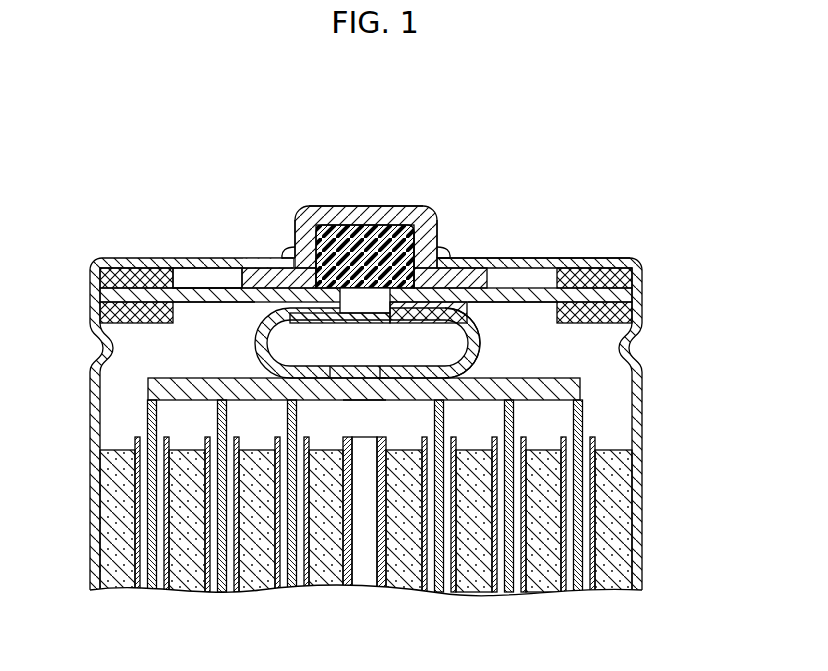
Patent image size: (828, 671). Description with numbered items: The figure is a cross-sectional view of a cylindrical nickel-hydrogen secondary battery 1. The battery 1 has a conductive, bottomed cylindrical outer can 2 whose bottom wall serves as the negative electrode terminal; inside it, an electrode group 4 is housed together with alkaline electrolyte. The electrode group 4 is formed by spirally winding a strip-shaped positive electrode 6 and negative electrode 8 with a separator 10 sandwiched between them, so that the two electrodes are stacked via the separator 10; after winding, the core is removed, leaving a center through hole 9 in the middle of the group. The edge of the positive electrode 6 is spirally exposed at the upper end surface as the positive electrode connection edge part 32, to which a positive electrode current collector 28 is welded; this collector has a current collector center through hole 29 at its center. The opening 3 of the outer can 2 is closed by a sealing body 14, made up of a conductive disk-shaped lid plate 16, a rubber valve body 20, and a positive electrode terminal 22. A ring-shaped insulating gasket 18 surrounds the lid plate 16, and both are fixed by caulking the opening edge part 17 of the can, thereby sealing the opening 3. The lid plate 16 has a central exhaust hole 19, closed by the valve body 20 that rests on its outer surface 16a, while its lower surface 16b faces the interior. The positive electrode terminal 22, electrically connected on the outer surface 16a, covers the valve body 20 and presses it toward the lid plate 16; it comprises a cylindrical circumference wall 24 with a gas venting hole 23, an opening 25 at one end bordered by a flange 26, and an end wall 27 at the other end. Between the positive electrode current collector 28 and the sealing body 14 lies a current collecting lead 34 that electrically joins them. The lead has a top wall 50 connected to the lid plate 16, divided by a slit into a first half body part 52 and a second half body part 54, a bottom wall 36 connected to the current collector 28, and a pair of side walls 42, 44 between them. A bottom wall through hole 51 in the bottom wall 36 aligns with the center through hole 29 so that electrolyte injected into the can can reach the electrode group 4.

The battery 1 is at (552, 166).
The outer can 2 is at (93, 493).
The opening 3 is at (558, 258).
The electrode group 4 is at (372, 524).
The positive electrode 6 is at (215, 567).
The negative electrode 8 is at (180, 514).
The center through hole 9 is at (366, 592).
The separator 10 is at (190, 543).
The sealing body 14 is at (199, 278).
The lid plate 16 is at (226, 290).
The outer surface 16a is at (185, 288).
The lower surface of sealing plate 16b is at (188, 303).
The opening edge part 17 is at (645, 280).
The insulating gasket 18 is at (128, 268).
The exhaust hole 19 is at (335, 290).
The valve body 20 is at (372, 280).
The positive electrode terminal 22 is at (397, 226).
The gas venting hole 23 is at (289, 252).
The circumference wall 24 is at (438, 240).
The opening 25 is at (408, 322).
The flange 26 is at (480, 278).
The end wall 27 is at (370, 207).
The positive electrode current collector 28 is at (582, 388).
The current collector center through hole 29 is at (362, 417).
The positive electrode connection edge part 32 is at (218, 422).
The current collecting lead 34 is at (488, 313).
The bottom wall 36 is at (340, 372).
The side wall 42 is at (257, 340).
The side wall 44 is at (482, 352).
The top wall 50 is at (275, 93).
The bottom wall through hole 51 is at (384, 380).
The first half body part 52 is at (408, 282).
The second half body part 54 is at (328, 278).